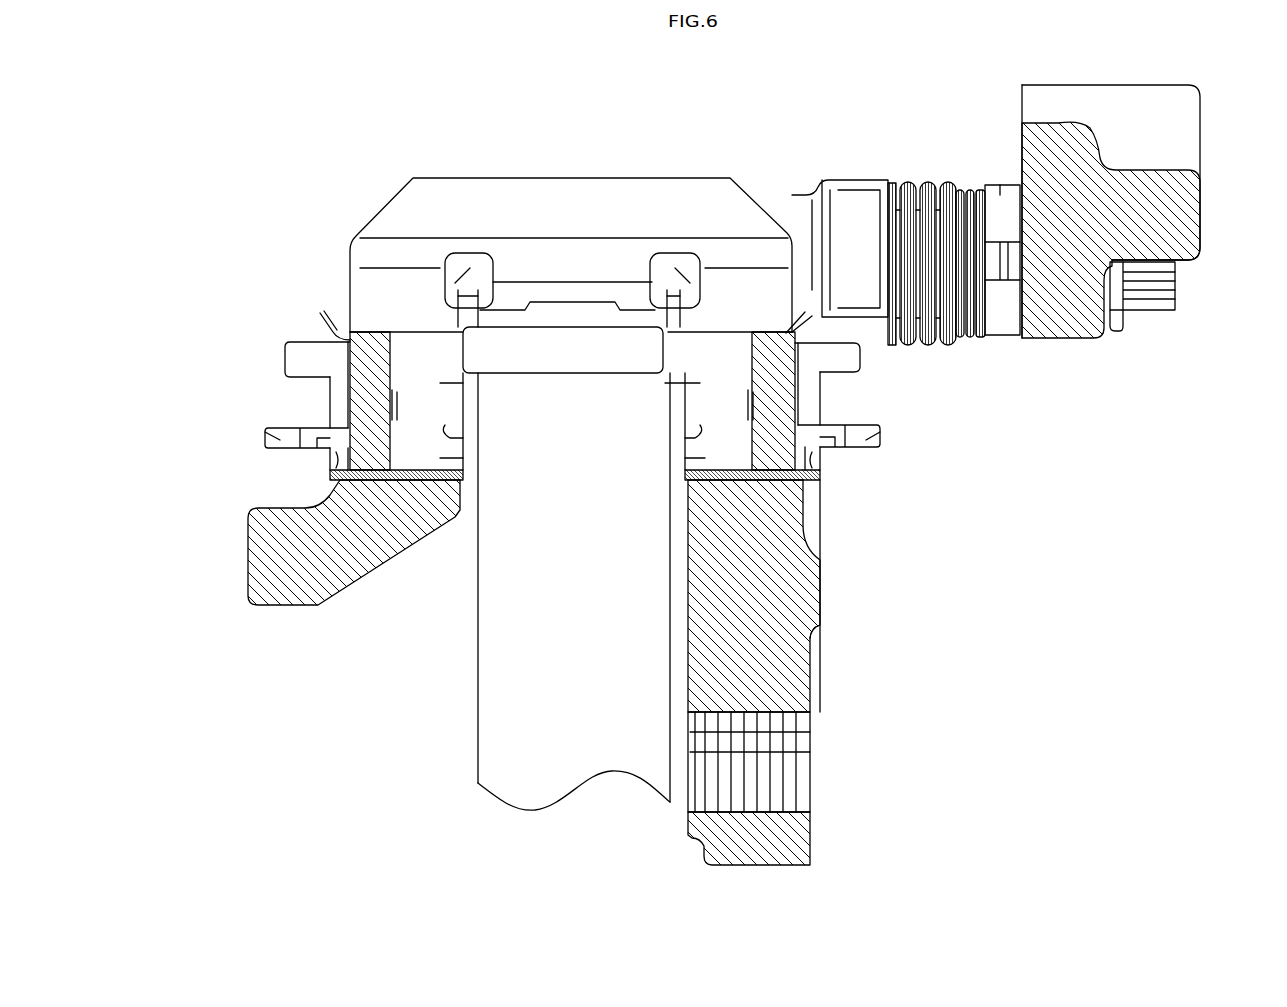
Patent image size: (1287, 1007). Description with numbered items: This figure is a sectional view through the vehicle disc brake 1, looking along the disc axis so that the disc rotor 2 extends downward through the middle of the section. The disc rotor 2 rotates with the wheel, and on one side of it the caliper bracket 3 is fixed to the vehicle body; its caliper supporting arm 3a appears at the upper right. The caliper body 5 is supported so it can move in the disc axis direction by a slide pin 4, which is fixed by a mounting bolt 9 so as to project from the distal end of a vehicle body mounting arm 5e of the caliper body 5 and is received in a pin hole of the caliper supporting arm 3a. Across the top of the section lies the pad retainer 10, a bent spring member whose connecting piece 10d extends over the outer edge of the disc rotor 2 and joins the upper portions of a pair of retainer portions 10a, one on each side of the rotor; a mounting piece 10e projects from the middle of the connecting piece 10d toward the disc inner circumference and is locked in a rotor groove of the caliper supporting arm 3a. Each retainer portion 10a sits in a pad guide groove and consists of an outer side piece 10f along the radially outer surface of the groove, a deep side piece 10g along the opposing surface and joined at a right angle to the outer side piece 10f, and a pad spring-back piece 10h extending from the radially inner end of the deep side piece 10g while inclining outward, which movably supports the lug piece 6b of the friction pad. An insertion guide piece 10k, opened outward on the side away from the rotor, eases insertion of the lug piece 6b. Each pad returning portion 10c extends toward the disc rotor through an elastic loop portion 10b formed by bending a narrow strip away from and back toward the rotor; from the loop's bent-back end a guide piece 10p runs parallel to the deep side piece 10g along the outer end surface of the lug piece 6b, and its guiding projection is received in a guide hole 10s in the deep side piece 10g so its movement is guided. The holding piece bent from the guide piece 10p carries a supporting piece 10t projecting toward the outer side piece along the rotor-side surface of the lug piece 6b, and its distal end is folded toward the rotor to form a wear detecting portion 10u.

The vehicle disc brake 1 is at (703, 84).
The disc rotor 2 is at (478, 705).
The caliper bracket 3 is at (830, 602).
The caliper supporting arm 3a is at (790, 208).
The slide pin 4 is at (1012, 343).
The caliper body 5 is at (1208, 118).
The vehicle body mounting arm 5e is at (1185, 215).
The lug piece 6b is at (375, 345).
The mounting bolt 9 is at (1148, 312).
The pad retainer 10 is at (619, 220).
The retainer portion 10a is at (322, 412).
The elastic loop portion 10b is at (268, 437).
The pad returning portion 10c is at (262, 450).
The connecting piece 10d is at (558, 192).
The mounting piece 10e is at (571, 300).
The outer side piece 10f is at (466, 350).
The deep side piece 10g is at (466, 385).
The pad spring-back piece 10h is at (465, 478).
The insertion guide piece 10k is at (322, 318).
The guide piece 10p is at (330, 462).
The guide hole 10s is at (465, 430).
The supporting piece 10t is at (398, 408).
The wear detecting portion 10u is at (470, 460).